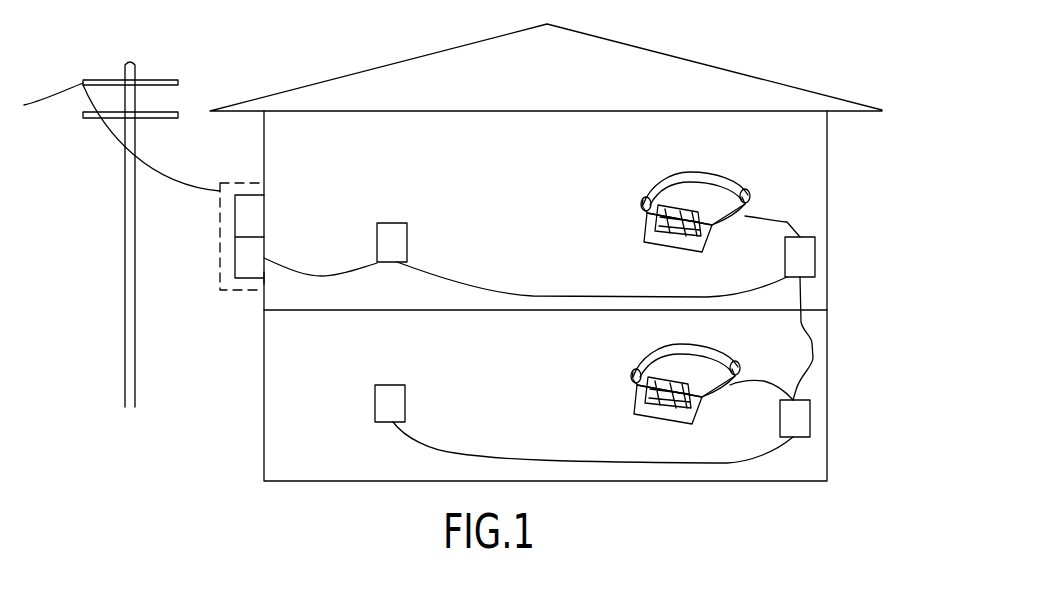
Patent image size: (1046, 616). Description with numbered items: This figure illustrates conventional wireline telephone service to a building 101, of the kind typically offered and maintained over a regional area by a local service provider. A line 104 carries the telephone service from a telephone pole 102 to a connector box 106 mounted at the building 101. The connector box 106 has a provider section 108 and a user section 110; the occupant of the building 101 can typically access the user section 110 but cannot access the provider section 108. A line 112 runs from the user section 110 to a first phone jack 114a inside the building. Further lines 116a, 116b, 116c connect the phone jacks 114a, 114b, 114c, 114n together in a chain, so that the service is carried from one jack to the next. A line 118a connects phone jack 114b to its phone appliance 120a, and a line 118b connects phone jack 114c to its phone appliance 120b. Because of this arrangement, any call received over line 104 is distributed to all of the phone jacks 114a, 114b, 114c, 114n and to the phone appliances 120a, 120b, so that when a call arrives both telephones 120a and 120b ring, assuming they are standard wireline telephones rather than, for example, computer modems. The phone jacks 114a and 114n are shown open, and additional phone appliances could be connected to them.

The building 101 is at (735, 70).
The telephone pole 102 is at (135, 62).
The line 104 is at (160, 182).
The connector box 106 is at (230, 183).
The provider section 108 is at (267, 213).
The user section 110 is at (267, 277).
The line 112 is at (328, 273).
The phone jack 114a is at (405, 223).
The phone jack 114b is at (815, 258).
The phone jack 114c is at (810, 418).
The phone jack 114n is at (405, 404).
The line 116a is at (533, 295).
The line 116b is at (813, 341).
The line 116c is at (582, 460).
The line 118a is at (787, 222).
The line 118b is at (757, 380).
The phone appliance 120a is at (703, 174).
The phone appliance 120b is at (638, 353).